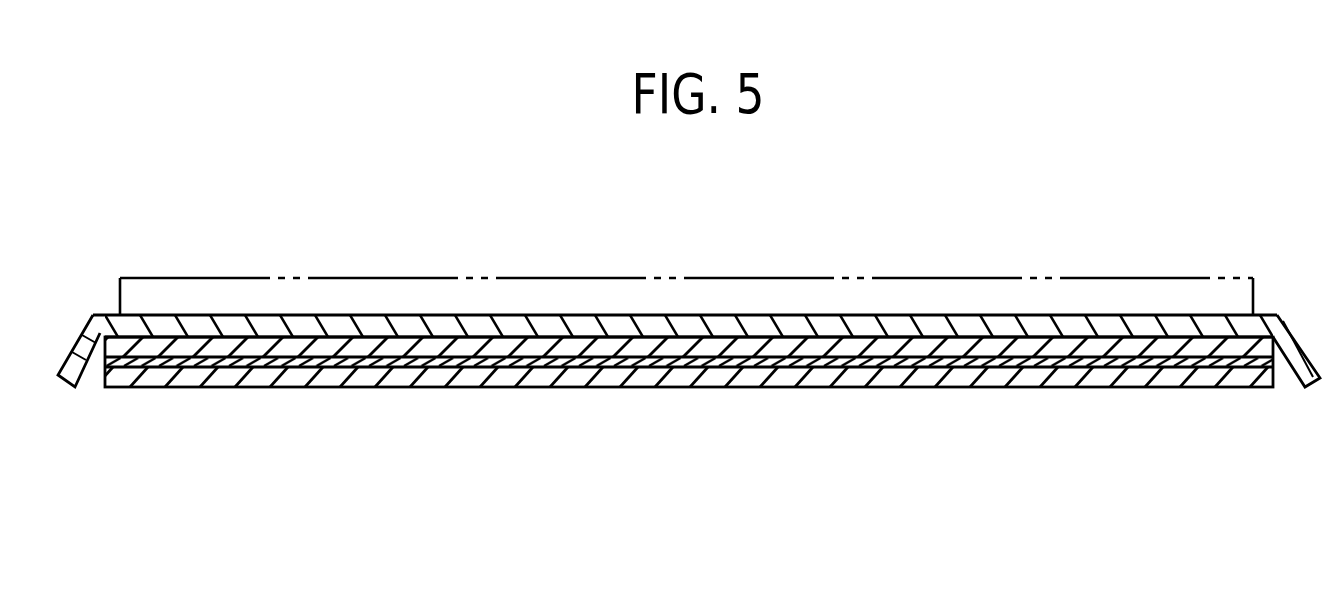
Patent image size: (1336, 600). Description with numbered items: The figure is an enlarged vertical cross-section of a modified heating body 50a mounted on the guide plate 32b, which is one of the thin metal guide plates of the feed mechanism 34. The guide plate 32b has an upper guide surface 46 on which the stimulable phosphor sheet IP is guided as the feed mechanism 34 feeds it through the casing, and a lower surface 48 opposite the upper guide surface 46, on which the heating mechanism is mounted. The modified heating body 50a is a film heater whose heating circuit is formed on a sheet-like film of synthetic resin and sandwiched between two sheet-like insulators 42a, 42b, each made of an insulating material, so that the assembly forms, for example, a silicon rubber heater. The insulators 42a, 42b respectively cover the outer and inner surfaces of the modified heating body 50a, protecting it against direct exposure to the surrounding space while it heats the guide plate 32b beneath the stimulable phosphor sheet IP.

The feed mechanism 34 is at (945, 267).
The stimulable phosphor sheet IP is at (578, 302).
The guide plate 32b is at (833, 323).
The sheet-like insulator 42a is at (723, 342).
The sheet-like insulator 42b is at (642, 377).
The upper guide surface 46 is at (263, 315).
The lower surface 48 is at (263, 360).
The modified heating body 50a is at (1278, 365).